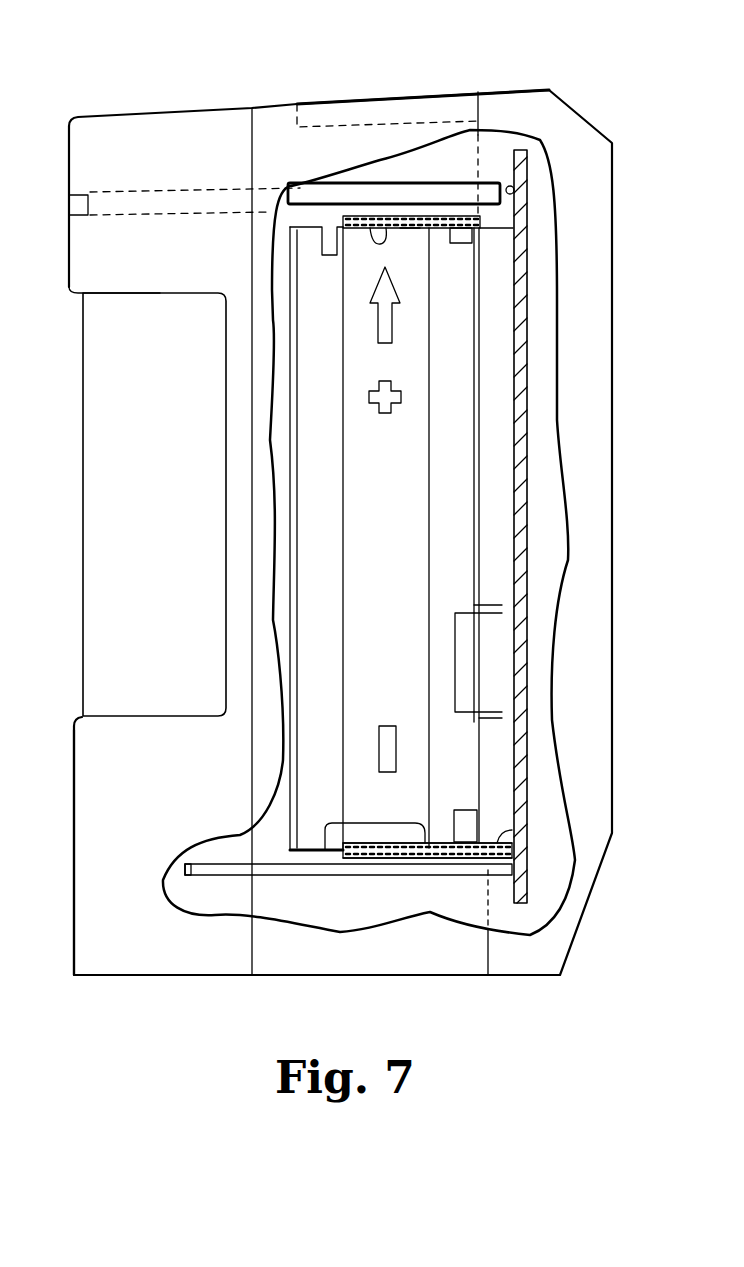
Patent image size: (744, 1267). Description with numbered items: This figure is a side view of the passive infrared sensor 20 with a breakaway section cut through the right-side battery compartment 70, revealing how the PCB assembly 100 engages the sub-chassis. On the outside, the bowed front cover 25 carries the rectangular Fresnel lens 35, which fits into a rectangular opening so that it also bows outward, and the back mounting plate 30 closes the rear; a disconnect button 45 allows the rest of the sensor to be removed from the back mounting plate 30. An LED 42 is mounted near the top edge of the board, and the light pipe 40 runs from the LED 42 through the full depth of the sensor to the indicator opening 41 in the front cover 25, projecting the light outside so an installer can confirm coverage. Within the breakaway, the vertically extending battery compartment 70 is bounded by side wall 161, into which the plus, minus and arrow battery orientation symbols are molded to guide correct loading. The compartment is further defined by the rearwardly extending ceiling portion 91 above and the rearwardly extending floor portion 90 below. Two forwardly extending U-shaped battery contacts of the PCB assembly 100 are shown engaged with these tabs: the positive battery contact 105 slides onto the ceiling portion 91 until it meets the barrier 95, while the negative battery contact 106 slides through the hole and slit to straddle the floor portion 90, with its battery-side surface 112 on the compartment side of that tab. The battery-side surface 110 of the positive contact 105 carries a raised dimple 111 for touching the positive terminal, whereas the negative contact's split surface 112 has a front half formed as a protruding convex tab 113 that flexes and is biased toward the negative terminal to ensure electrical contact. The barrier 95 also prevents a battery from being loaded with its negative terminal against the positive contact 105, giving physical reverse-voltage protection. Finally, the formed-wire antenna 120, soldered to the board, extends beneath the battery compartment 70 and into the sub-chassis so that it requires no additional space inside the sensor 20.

The passive infrared sensor 20 is at (138, 72).
The front cover 25 is at (90, 846).
The back mounting plate 30 is at (614, 203).
The Fresnel lens 35 is at (115, 466).
The light pipe 40 is at (305, 197).
The indicator opening 41 is at (68, 206).
The LED 42 is at (516, 190).
The disconnect button 45 is at (380, 93).
The battery compartment 70 is at (457, 572).
The floor portion 90 is at (400, 858).
The ceiling portion 91 is at (408, 222).
The barrier 95 is at (330, 238).
The PCB assembly 100 is at (525, 390).
The battery contact 105 is at (493, 218).
The battery contact 106 is at (499, 853).
The battery-side surface 110 is at (386, 238).
The raised dimple 111 is at (412, 229).
The battery-side surface 112 is at (497, 842).
The convex tab 113 is at (385, 833).
The antenna 120 is at (185, 877).
The side wall 161 is at (397, 528).